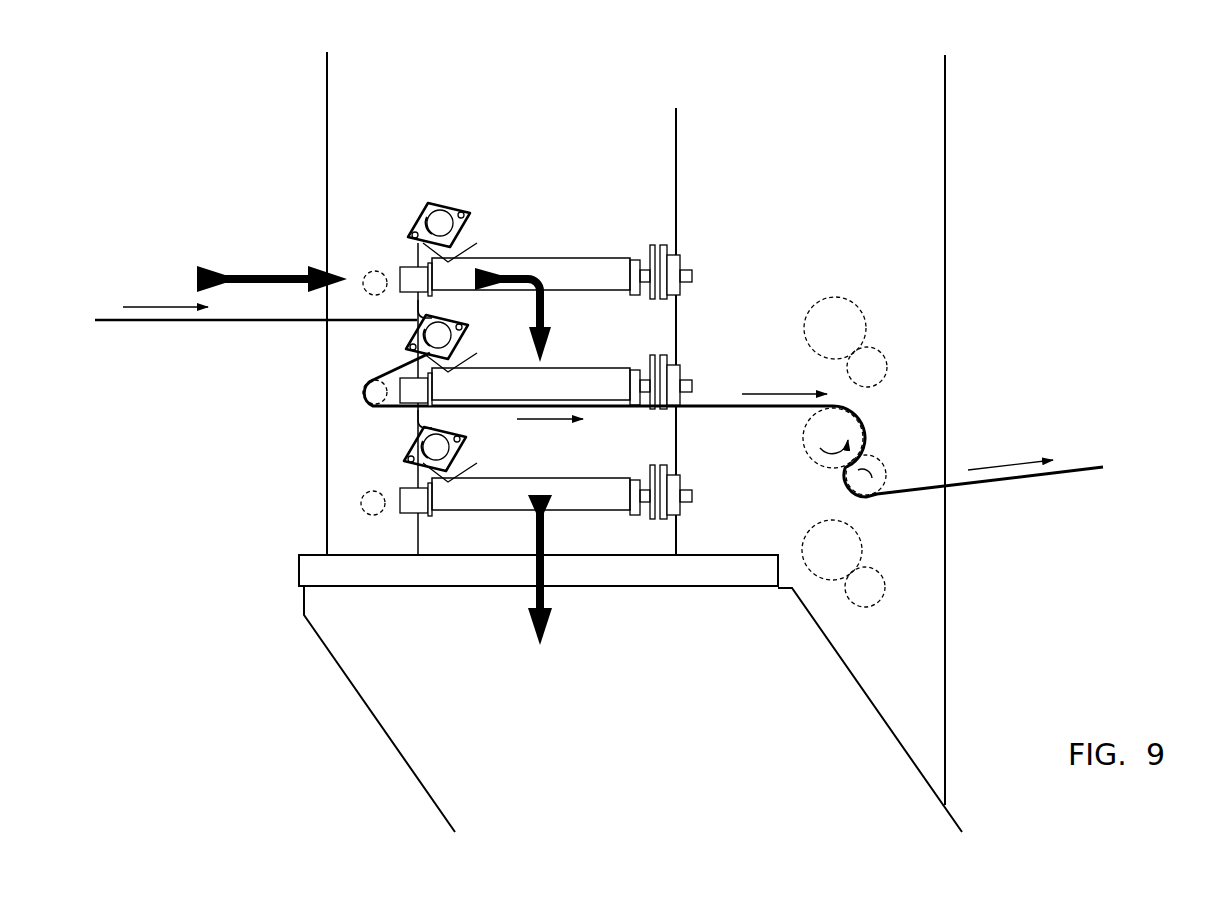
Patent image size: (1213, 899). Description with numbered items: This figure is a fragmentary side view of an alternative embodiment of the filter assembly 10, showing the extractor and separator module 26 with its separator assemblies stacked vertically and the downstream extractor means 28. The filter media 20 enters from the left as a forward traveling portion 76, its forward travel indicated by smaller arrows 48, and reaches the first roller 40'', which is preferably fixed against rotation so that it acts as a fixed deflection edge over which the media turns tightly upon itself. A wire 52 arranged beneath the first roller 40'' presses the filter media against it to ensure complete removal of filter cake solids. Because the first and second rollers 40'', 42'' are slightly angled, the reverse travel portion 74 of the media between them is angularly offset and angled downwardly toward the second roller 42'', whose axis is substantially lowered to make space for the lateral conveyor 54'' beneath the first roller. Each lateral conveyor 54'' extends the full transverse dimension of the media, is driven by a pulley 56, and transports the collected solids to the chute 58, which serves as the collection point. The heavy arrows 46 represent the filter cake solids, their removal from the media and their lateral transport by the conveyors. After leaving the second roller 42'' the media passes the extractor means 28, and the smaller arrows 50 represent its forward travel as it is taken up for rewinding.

The filter assembly 10 is at (978, 77).
The filter media 20 is at (243, 325).
The extractor and separator module 26 is at (562, 93).
The extractor means 28 is at (875, 442).
The first roller 40'' is at (432, 300).
The second roller 42'' is at (316, 393).
The arrows representing filter cake solids 46 is at (263, 275).
The arrows representing forward travel of filter media 48 is at (165, 305).
The arrows representing forward travel after extractor means 50 is at (1008, 462).
The wire 52 is at (460, 365).
The lateral conveyor 54'' is at (536, 353).
The pulley 56 is at (672, 258).
The chute 58 is at (397, 756).
The reverse travel portion 74 is at (390, 368).
The forward traveling portion 76 is at (342, 318).